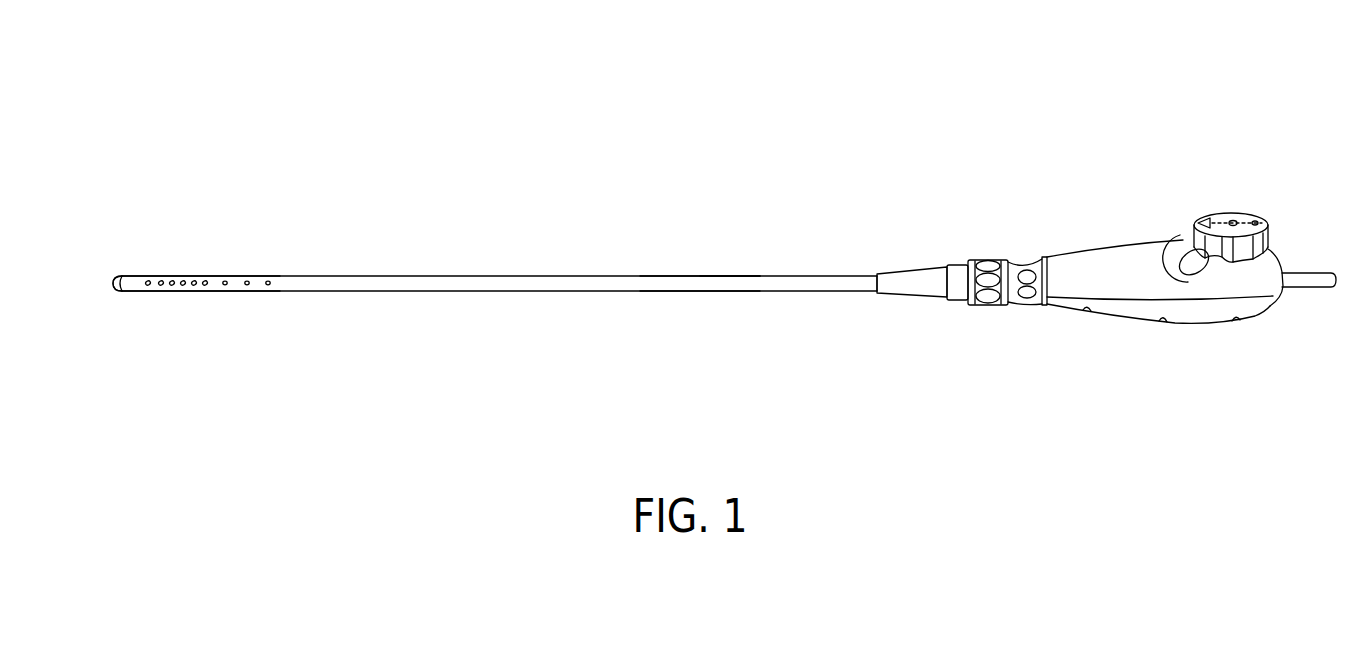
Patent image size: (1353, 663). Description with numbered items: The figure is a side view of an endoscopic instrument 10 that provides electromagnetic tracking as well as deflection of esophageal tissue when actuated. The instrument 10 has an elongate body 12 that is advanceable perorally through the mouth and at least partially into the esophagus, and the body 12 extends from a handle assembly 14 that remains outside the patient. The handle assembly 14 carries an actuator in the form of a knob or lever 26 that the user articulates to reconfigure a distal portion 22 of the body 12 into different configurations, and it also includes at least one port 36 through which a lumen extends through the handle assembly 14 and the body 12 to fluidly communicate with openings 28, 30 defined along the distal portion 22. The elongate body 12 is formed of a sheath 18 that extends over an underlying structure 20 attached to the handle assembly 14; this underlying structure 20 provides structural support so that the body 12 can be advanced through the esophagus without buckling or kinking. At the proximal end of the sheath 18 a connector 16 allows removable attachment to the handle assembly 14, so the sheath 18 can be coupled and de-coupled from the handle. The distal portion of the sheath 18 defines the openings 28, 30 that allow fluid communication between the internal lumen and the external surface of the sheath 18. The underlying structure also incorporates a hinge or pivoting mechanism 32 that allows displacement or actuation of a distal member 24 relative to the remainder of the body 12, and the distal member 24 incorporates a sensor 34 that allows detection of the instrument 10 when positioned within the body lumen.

The endoscopic instrument 10 is at (560, 70).
The elongate body 12 is at (593, 291).
The handle assembly 14 is at (1130, 318).
The connector 16 is at (978, 303).
The sheath 18 is at (690, 291).
The underlying structure 20 is at (733, 287).
The distal portion 22 is at (192, 200).
The distal member 24 is at (160, 291).
The knob or lever 26 is at (1222, 215).
The openings 28 is at (168, 263).
The openings 30 is at (245, 265).
The hinge or pivoting mechanism 32 is at (208, 291).
The sensor 34 is at (123, 292).
The port 36 is at (1308, 288).